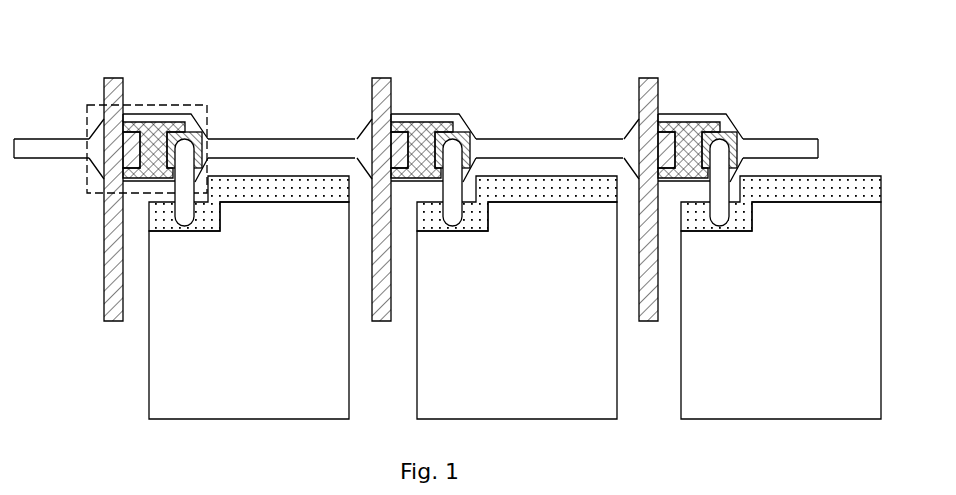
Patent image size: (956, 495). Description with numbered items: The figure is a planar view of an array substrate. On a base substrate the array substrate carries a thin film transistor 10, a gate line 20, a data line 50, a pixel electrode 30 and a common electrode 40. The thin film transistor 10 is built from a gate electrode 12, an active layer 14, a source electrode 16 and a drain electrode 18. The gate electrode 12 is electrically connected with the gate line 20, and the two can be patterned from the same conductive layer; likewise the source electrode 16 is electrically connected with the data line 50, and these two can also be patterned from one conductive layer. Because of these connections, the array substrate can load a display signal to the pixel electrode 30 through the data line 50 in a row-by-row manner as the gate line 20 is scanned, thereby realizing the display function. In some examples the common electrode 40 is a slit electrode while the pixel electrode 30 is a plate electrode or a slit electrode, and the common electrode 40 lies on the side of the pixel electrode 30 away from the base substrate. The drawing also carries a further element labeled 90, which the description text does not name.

The thin film transistor 10 is at (149, 177).
The gate electrode 12 is at (167, 120).
The active layer 14 is at (140, 170).
The source electrode 16 is at (102, 190).
The drain electrode 18 is at (202, 131).
The gate line 20 is at (530, 139).
The pixel electrode 30 is at (255, 185).
The common electrode 40 is at (263, 222).
The data line 50 is at (388, 78).
The pin 90 is at (187, 212).